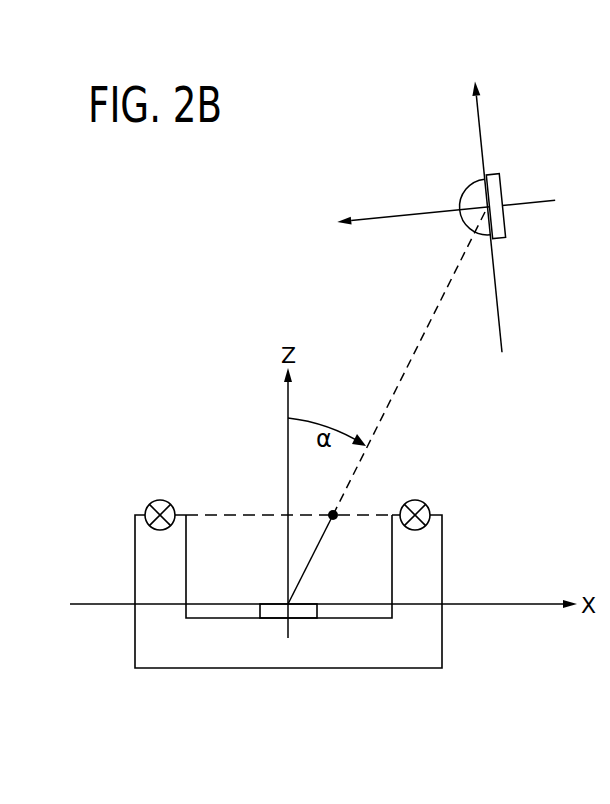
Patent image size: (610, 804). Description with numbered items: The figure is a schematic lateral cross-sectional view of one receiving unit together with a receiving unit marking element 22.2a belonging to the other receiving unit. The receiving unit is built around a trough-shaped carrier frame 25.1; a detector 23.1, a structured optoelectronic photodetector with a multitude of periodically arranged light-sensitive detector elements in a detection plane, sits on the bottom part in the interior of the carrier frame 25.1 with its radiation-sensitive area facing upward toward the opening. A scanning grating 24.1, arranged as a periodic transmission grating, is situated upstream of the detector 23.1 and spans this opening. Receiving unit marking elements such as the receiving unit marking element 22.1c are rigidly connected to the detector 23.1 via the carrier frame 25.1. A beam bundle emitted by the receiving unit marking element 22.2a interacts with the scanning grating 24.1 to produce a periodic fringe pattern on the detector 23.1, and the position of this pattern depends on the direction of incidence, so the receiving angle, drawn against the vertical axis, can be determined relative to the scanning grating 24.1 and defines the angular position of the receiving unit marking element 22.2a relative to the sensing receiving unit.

The receiving unit marking element 22.1c is at (417, 500).
The receiving unit marking element 22.2a is at (507, 227).
The detector 23.1 is at (272, 604).
The scanning grating 24.1 is at (232, 513).
The carrier frame 25.1 is at (238, 668).